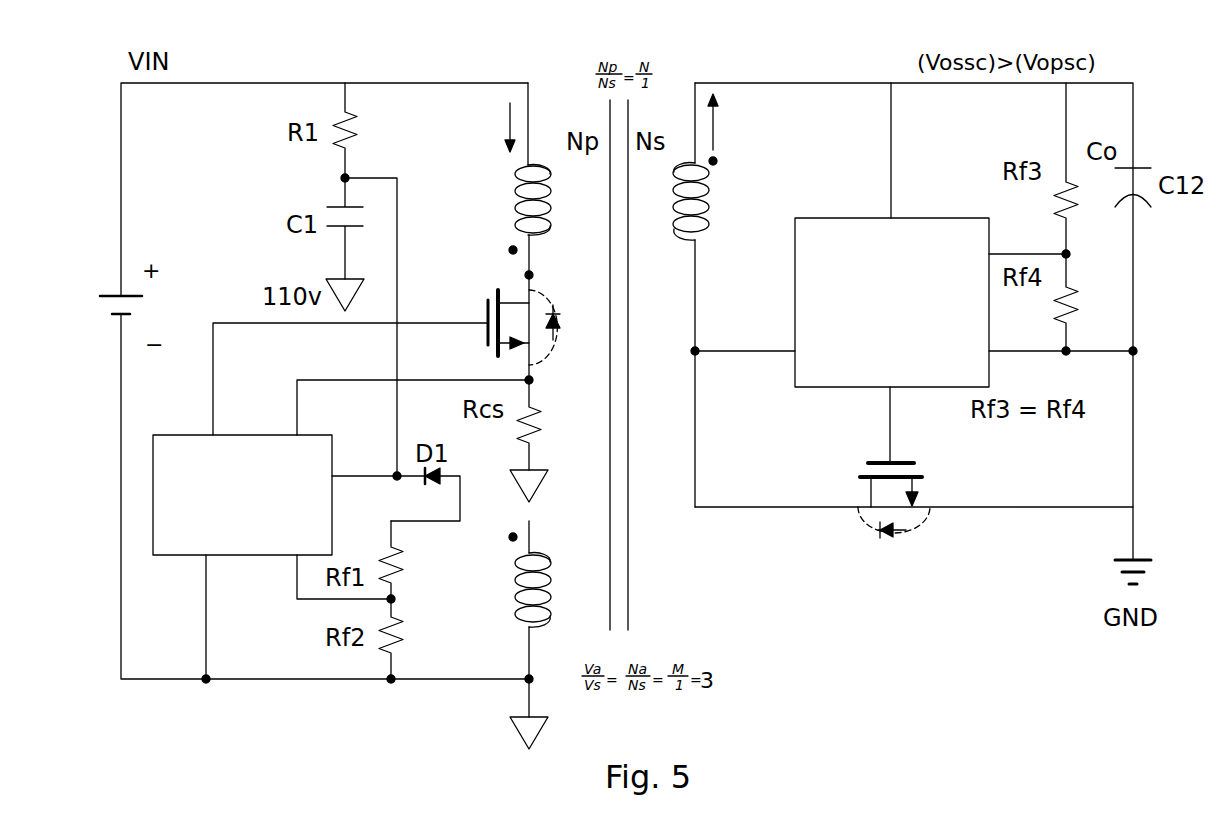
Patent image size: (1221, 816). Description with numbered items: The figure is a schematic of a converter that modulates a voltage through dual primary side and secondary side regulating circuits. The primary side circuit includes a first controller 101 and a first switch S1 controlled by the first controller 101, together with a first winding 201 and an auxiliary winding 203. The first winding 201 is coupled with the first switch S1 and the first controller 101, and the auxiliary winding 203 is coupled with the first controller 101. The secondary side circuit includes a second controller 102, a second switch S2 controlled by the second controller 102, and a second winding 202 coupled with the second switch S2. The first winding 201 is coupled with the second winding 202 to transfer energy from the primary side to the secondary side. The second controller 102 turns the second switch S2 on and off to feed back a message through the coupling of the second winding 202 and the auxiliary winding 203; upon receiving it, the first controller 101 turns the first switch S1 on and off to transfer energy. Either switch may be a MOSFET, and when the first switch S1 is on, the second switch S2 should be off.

The first controller 101 is at (250, 434).
The second controller 102 is at (926, 217).
The first winding 201 is at (532, 160).
The second winding 202 is at (686, 162).
The auxiliary winding 203 is at (550, 622).
The first switch S1 is at (553, 285).
The second switch S2 is at (926, 478).